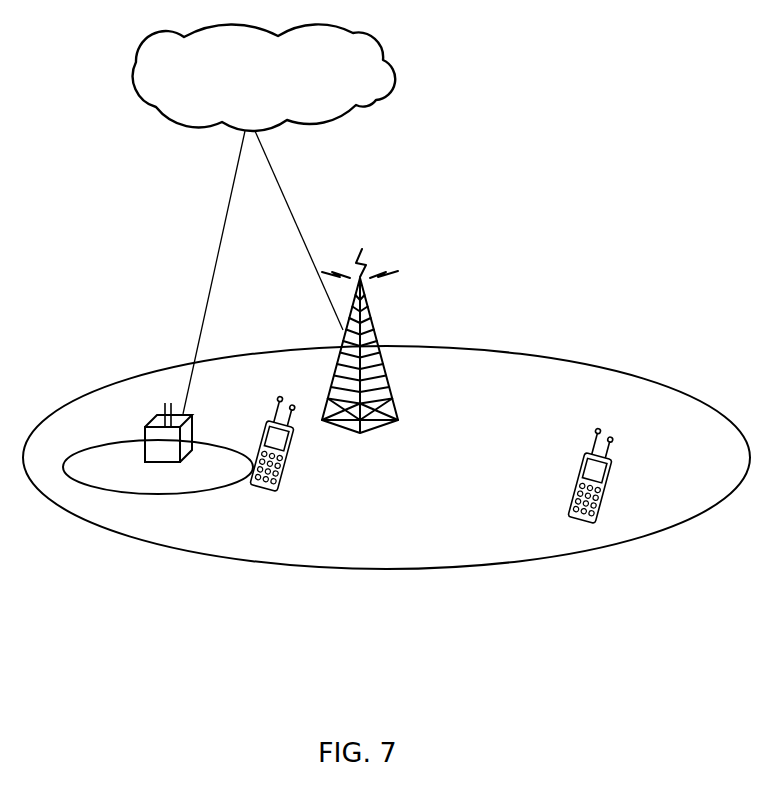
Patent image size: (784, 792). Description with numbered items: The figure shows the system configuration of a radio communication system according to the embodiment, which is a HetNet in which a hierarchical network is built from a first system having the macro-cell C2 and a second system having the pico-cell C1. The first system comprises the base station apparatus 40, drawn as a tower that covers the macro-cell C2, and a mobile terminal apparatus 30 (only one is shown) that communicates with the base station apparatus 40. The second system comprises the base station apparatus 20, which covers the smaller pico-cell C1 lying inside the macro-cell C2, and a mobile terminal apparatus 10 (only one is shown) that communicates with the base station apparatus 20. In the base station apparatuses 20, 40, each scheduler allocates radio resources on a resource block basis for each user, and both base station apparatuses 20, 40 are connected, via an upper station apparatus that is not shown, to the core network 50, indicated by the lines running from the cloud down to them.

The mobile terminal apparatus 10 is at (287, 458).
The base station apparatus 20 is at (150, 423).
The mobile terminal apparatus 30 is at (602, 490).
The base station apparatus 40 is at (390, 386).
The core network 50 is at (353, 33).
The pico-cell C1 is at (212, 443).
The macro-cell C2 is at (560, 359).